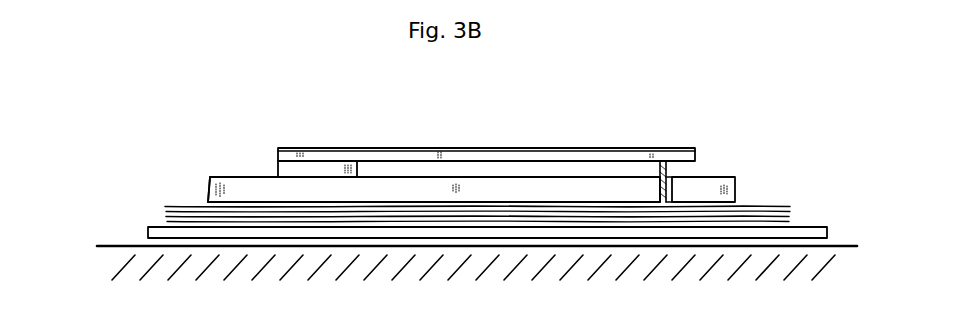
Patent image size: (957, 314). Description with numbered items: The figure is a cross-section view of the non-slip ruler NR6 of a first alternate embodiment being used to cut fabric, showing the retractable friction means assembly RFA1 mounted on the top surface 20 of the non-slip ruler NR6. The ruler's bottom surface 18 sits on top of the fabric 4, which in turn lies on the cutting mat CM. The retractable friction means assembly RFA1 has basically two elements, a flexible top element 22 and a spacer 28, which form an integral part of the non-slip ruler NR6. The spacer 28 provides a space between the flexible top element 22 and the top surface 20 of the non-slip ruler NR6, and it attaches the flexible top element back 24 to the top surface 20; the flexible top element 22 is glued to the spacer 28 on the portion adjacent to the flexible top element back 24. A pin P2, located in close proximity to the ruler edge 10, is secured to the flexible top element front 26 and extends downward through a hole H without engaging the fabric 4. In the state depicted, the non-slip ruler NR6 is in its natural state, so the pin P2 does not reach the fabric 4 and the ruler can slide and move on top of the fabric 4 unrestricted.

The fabric 4 is at (170, 207).
The ruler edge 10 is at (738, 180).
The bottom surface 18 is at (215, 192).
The top surface 20 is at (230, 176).
The flexible top element 22 is at (500, 148).
The flexible top element back 24 is at (317, 148).
The flexible top element front 26 is at (661, 150).
The spacer 28 is at (293, 172).
The cutting mat CM is at (148, 234).
The hole H is at (682, 171).
The non-slip ruler NR6 is at (316, 63).
The pin P2 is at (667, 170).
The retractable friction means assembly RFA1 is at (431, 126).